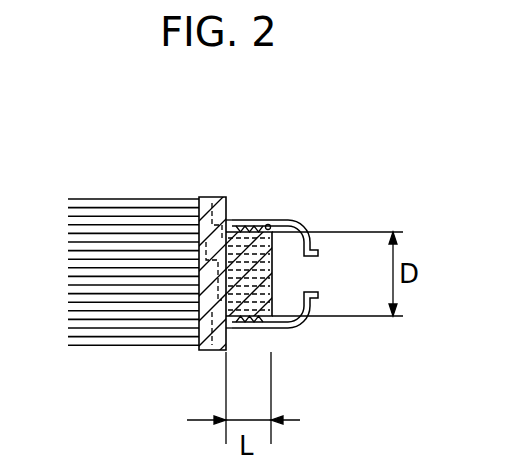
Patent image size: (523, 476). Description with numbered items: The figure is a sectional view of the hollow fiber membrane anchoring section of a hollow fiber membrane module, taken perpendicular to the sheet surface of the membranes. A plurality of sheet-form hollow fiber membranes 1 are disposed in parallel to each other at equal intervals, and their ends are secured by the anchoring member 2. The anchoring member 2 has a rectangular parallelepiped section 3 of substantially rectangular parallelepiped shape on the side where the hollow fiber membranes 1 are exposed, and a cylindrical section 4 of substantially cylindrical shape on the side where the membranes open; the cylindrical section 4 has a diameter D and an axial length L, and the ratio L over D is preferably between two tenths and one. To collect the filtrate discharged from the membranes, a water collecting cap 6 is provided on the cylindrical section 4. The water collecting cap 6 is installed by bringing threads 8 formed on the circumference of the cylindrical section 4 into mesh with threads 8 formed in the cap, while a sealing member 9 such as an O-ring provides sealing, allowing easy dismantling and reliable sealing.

The sheet-form hollow fiber membrane 1 is at (96, 346).
The anchoring member 2 is at (351, 272).
The rectangular parallelepiped section 3 is at (215, 200).
The cylindrical section 4 is at (241, 220).
The water collecting cap 6 is at (301, 323).
The threads 8 is at (245, 329).
The sealing member 9 is at (268, 224).